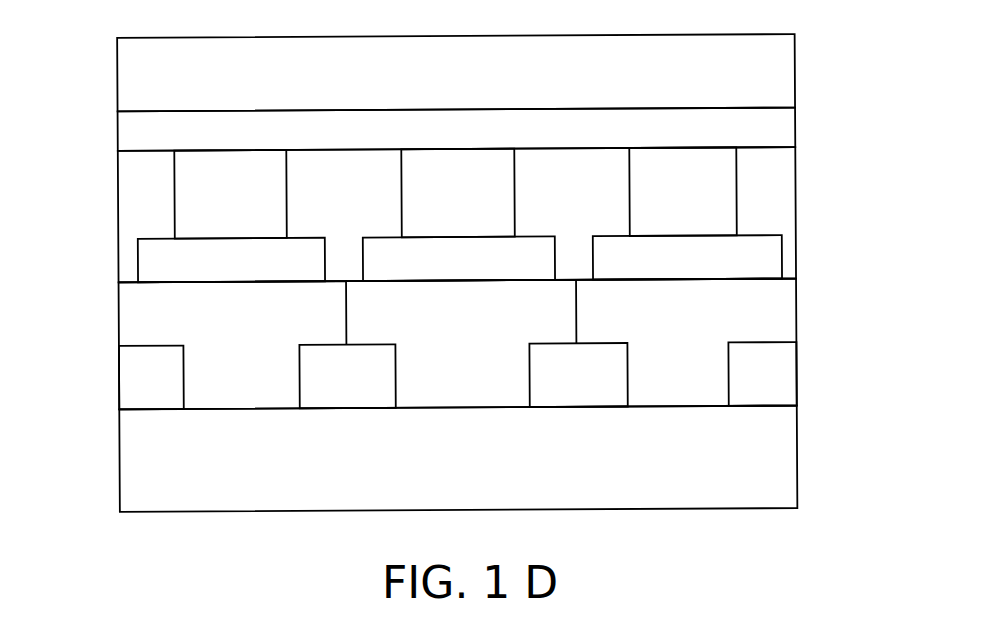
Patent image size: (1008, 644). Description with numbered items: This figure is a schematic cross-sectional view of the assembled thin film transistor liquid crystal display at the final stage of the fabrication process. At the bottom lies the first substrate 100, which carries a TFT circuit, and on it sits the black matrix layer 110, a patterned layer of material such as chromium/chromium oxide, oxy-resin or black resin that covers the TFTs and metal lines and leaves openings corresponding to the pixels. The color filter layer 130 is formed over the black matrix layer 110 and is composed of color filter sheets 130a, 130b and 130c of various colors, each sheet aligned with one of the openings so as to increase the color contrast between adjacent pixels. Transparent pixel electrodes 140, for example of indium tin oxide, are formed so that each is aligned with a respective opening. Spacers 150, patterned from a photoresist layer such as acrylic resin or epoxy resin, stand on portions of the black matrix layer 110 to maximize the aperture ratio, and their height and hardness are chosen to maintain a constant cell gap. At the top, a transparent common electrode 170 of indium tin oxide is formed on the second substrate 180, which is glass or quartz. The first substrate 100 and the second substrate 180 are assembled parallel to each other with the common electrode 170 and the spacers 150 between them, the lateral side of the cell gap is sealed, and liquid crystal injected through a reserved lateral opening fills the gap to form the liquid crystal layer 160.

The first substrate 100 is at (727, 478).
The black matrix layer 110 is at (780, 380).
The color filter layer 130 is at (513, 344).
The color filter sheet 130a is at (280, 328).
The color filter sheet 130b is at (437, 328).
The color filter sheet 130c is at (637, 328).
The pixel electrodes 140 is at (780, 262).
The spacers 150 is at (778, 200).
The liquid crystal layer 160 is at (211, 203).
The common electrode 170 is at (778, 128).
The second substrate 180 is at (778, 70).